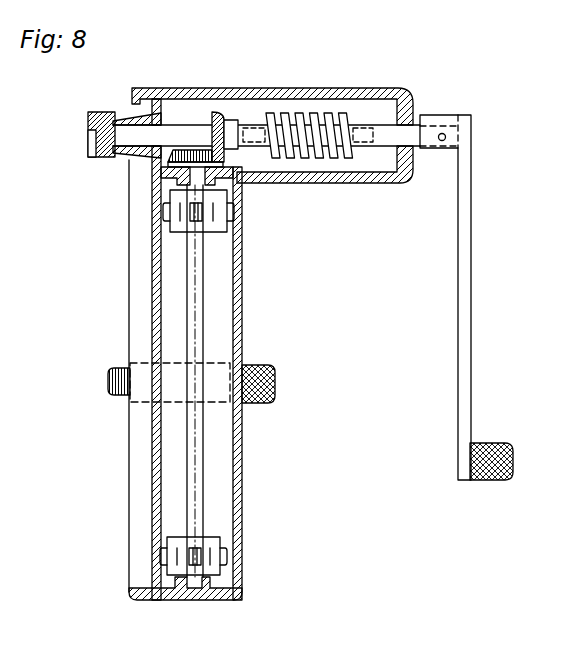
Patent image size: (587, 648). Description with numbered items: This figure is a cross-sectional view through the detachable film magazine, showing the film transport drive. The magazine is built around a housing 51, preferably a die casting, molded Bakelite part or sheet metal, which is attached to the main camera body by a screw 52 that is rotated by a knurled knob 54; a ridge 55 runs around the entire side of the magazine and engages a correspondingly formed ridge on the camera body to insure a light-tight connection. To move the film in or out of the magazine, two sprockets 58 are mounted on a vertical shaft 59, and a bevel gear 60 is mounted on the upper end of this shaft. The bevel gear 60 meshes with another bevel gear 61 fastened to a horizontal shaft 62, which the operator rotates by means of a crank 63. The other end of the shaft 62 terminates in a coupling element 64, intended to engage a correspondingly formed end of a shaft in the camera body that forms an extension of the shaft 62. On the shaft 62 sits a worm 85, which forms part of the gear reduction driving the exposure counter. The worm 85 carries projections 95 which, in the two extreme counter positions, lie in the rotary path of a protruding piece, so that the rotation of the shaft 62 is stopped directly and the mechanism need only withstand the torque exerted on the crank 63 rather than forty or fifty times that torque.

The housing 51 is at (243, 318).
The screw 52 is at (114, 368).
The knurled knob 54 is at (260, 367).
The ridge 55 is at (142, 593).
The sprocket 58 is at (175, 229).
The shaft 59 is at (196, 316).
The bevel gear 60 is at (176, 158).
The bevel gear 61 is at (215, 110).
The shaft 62 is at (174, 136).
The crank 63 is at (469, 302).
The coupling element 64 is at (100, 112).
The worm 85 is at (309, 106).
The projection 95 is at (253, 112).